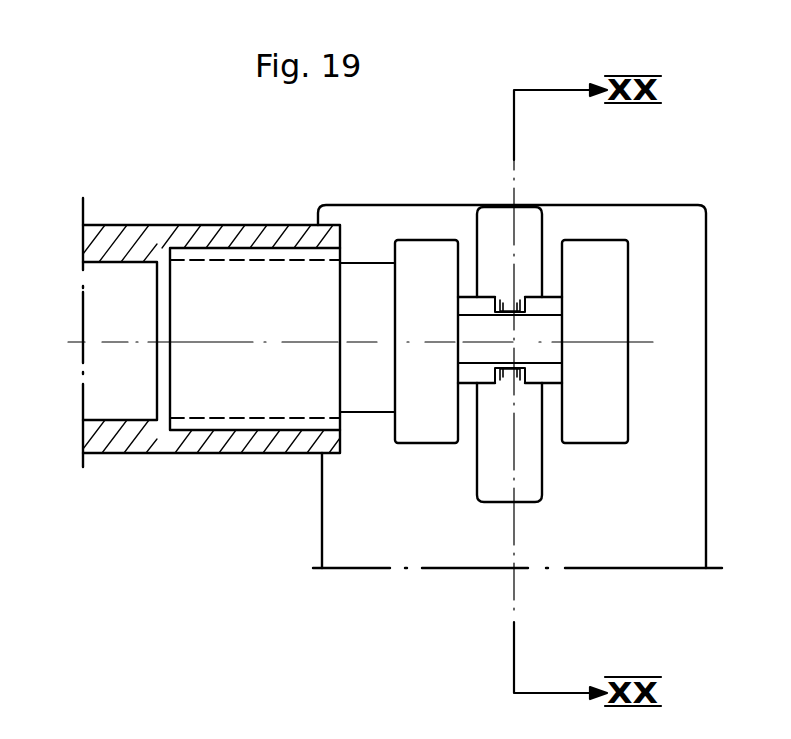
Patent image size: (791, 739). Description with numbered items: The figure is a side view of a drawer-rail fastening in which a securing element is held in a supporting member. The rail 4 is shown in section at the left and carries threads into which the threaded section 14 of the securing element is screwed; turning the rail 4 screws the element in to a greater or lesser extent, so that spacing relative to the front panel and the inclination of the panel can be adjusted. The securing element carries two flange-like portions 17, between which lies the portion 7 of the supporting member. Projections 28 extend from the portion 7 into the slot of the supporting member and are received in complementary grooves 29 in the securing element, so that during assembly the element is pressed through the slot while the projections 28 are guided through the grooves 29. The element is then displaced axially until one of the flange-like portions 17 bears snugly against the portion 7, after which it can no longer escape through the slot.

The rail 4 is at (130, 214).
The threaded section 14 is at (223, 262).
The flange-like portion 17 is at (417, 262).
The portion 7 is at (522, 206).
The groove 29 is at (523, 306).
The projection 28 is at (506, 383).